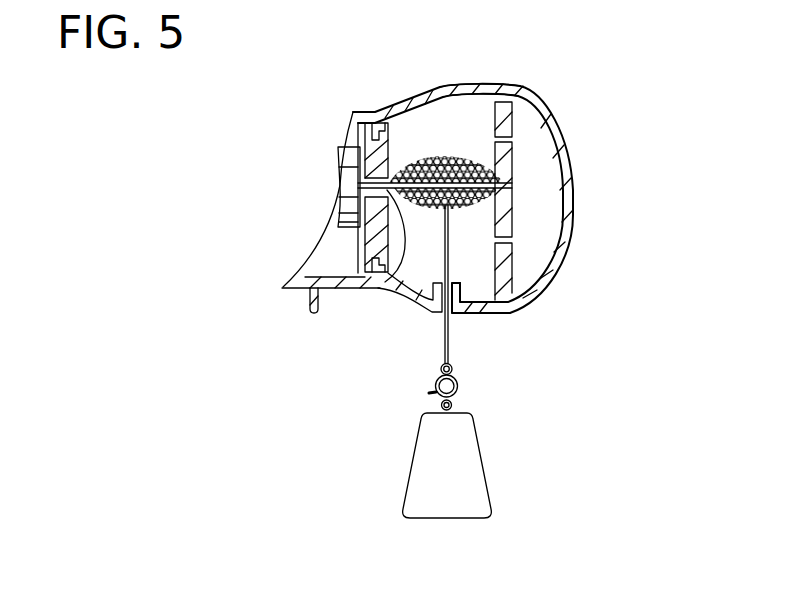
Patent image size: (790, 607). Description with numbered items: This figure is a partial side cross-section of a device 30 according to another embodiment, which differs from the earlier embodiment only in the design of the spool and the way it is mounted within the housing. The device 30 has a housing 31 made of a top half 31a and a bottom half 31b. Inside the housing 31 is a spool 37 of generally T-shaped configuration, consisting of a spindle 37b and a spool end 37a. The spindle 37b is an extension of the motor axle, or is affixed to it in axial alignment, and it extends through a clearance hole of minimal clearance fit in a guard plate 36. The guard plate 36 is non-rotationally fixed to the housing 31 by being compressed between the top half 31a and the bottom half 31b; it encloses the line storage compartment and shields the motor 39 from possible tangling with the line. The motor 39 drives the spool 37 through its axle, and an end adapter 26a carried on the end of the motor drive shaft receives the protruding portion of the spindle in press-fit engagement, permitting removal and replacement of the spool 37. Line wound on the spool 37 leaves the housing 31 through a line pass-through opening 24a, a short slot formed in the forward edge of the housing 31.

The device 30 is at (582, 197).
The housing 31 is at (255, 198).
The top half 31a is at (393, 99).
The bottom half 31b is at (347, 288).
The guard plate 36 is at (440, 98).
The spool 37 is at (580, 185).
The spool end 37a is at (503, 218).
The spindle 37b is at (455, 183).
The motor 39 is at (343, 189).
The line pass-through opening 24a is at (467, 268).
The end adapter 26a is at (402, 287).